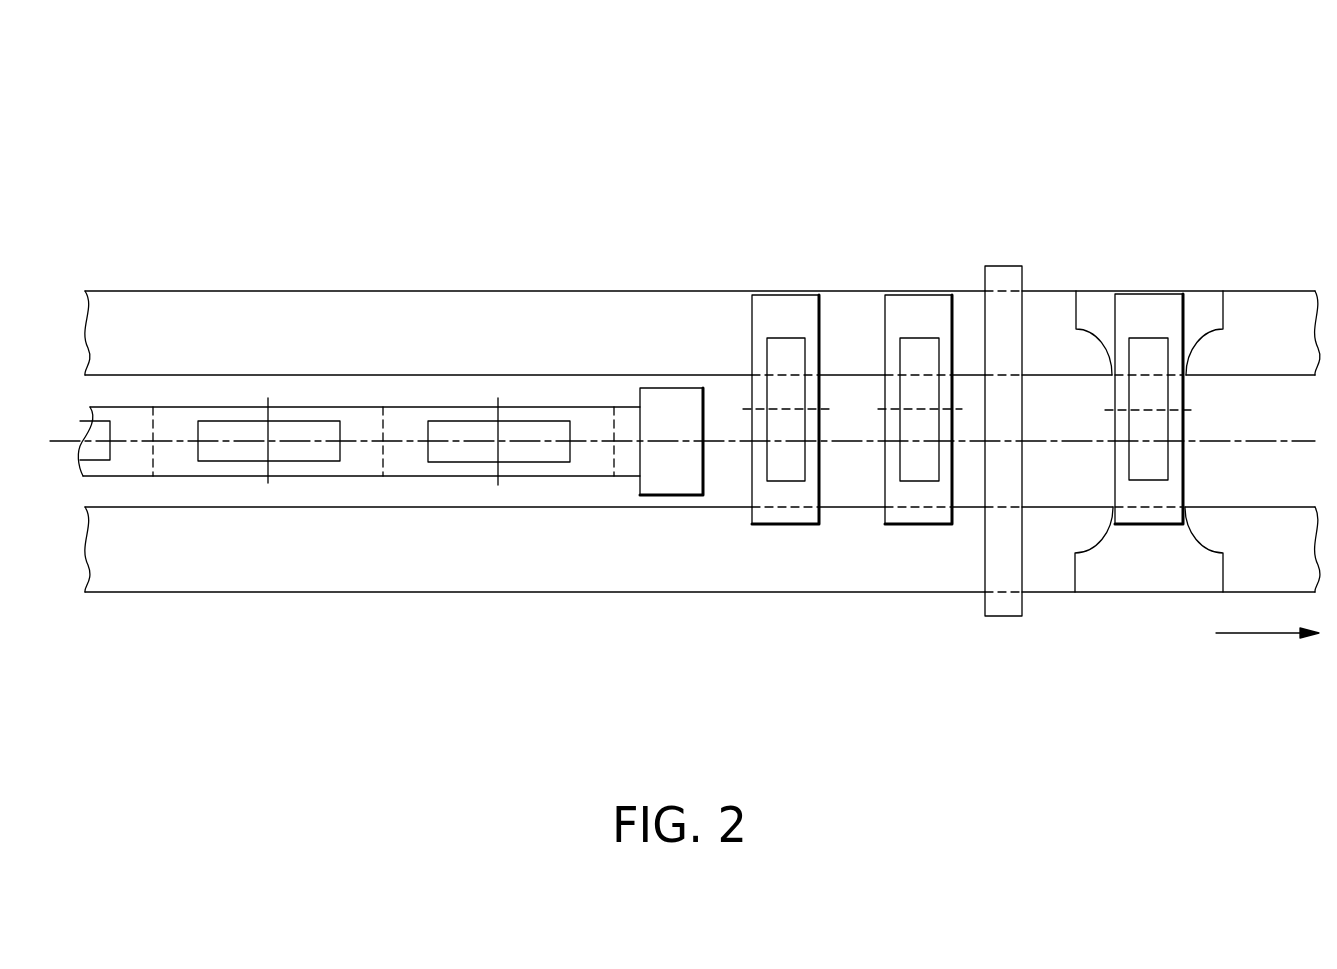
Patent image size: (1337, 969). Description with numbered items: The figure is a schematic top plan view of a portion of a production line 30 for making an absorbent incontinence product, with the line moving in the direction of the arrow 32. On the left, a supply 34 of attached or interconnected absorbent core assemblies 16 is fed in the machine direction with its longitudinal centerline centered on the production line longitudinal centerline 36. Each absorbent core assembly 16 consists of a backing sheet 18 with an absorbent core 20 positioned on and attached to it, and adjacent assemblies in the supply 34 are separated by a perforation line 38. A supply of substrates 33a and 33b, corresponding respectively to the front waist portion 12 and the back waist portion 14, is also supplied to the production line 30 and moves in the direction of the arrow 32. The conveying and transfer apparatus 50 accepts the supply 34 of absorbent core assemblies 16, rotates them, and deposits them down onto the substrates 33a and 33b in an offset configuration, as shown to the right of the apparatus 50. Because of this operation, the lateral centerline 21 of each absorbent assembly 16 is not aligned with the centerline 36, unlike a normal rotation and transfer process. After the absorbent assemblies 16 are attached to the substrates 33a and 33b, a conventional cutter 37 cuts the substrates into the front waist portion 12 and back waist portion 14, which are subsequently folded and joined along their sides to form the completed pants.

The production line 30 is at (264, 143).
The front waist portion 12 is at (1217, 324).
The back waist portion 14 is at (1195, 581).
The absorbent core assembly 16 is at (423, 477).
The backing sheet 18 is at (412, 428).
The absorbent core 20 is at (538, 432).
The lateral centerline of the absorbent core 21 is at (497, 413).
The arrow 32 is at (1265, 634).
The substrate 33a is at (267, 340).
The substrate 33b is at (319, 557).
The supply 34 is at (112, 412).
The production line longitudinal centerline 36 is at (1268, 441).
The cutter 37 is at (1000, 598).
The perforation line 38 is at (153, 432).
The conveying and transfer apparatus 50 is at (686, 430).